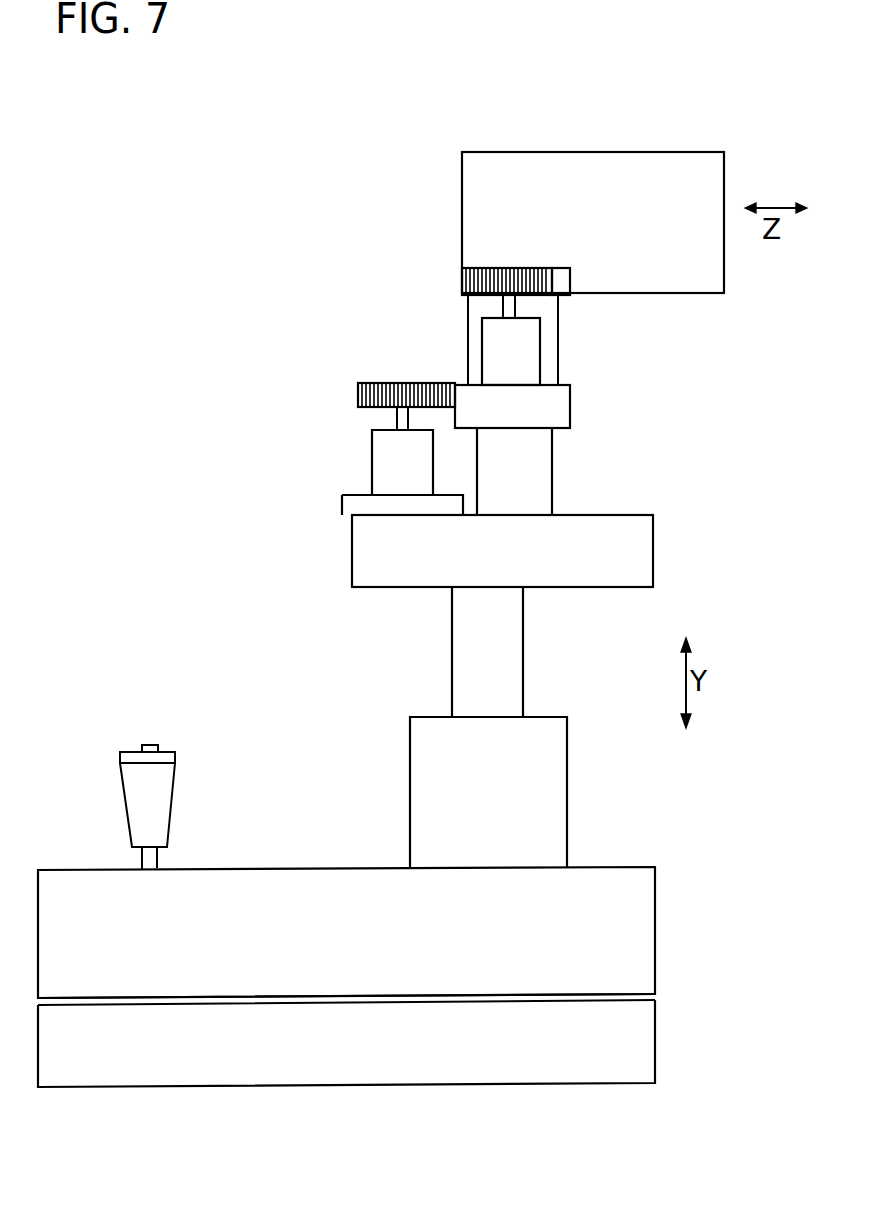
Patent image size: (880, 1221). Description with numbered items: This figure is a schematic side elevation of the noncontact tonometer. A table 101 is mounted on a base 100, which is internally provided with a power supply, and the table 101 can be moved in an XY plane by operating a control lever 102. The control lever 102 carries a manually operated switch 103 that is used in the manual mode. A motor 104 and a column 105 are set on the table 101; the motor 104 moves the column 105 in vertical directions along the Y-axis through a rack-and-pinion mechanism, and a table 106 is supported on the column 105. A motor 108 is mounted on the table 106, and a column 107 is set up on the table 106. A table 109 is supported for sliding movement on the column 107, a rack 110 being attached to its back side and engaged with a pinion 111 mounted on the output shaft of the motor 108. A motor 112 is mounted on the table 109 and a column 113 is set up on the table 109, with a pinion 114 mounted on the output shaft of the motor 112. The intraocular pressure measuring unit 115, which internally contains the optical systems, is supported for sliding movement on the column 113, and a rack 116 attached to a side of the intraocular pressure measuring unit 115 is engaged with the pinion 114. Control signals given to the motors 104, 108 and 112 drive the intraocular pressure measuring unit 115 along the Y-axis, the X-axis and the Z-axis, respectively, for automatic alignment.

The base 100 is at (417, 1050).
The table 101 is at (610, 935).
The control lever 102 is at (140, 793).
The manually operated switch 103 is at (151, 745).
The motor 104 is at (437, 795).
The column 105 is at (470, 653).
The table 106 is at (378, 555).
The column 107 is at (535, 466).
The motor 108 is at (398, 450).
The table 109 is at (548, 408).
The rack 110 is at (450, 388).
The pinion 111 is at (368, 383).
The motor 112 is at (522, 362).
The column 113 is at (548, 332).
The pinion 114 is at (480, 270).
The intraocular pressure measuring unit 115 is at (578, 140).
The rack 116 is at (565, 268).